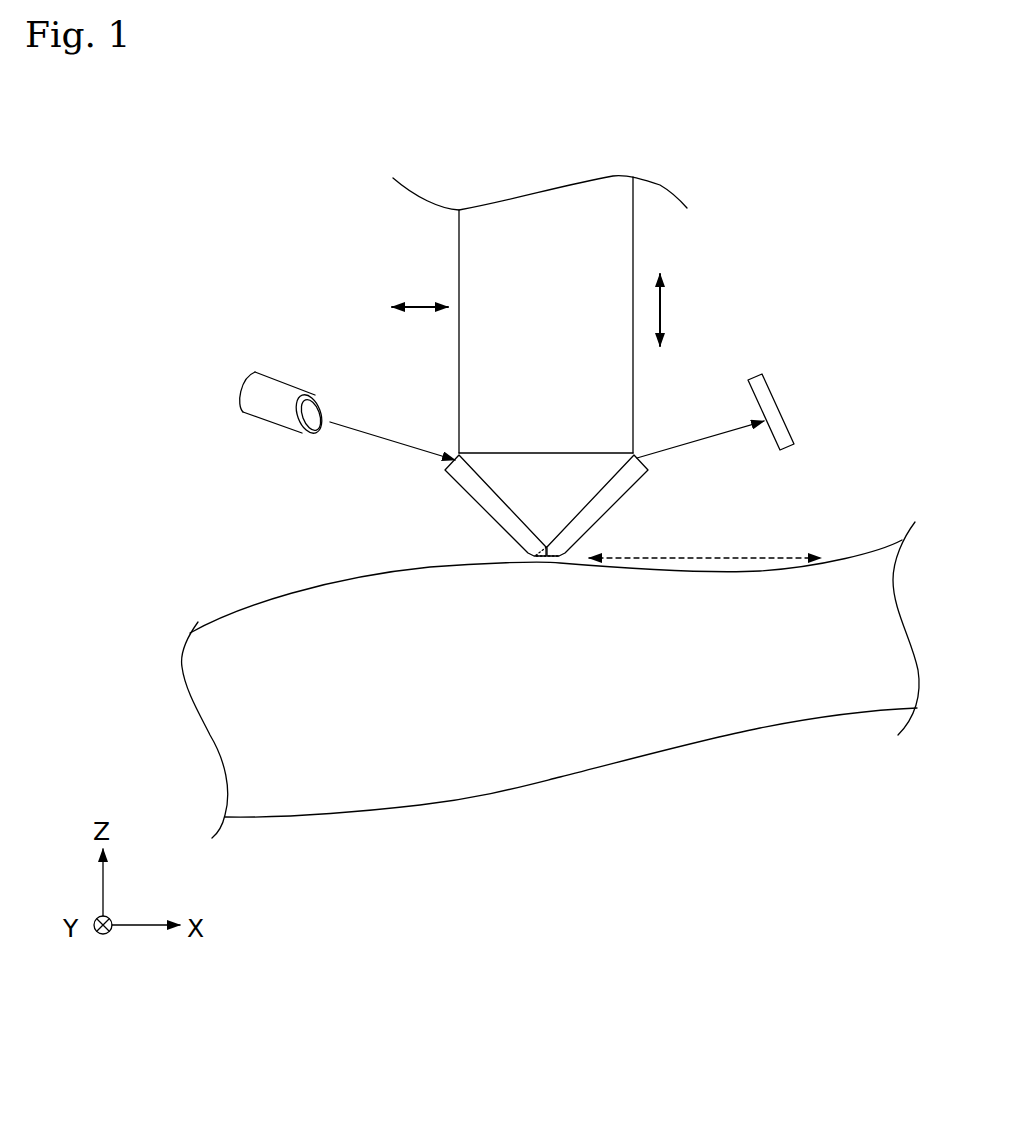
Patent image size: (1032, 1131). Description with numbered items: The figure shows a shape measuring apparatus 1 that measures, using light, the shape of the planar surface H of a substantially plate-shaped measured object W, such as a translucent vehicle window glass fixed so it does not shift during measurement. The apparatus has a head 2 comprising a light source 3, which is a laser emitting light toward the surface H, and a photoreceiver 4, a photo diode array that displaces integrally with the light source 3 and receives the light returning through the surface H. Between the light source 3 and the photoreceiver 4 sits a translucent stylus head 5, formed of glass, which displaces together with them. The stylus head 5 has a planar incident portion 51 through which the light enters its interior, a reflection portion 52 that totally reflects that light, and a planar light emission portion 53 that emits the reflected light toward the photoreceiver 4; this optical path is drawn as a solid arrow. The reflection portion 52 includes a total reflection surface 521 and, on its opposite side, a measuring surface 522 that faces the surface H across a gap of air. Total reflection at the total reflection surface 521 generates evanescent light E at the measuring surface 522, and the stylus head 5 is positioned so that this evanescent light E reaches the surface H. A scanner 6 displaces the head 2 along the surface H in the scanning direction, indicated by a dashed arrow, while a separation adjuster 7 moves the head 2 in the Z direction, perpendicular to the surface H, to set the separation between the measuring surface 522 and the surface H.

The shape measuring apparatus 1 is at (796, 209).
The head 2 is at (530, 450).
The light source 3 is at (283, 380).
The photoreceiver 4 is at (763, 375).
The stylus head 5 is at (575, 498).
The scanner 6 is at (461, 268).
The separation adjuster 7 is at (624, 245).
The incident portion 51 is at (454, 455).
The reflection portion 52 is at (536, 537).
The light emission portion 53 is at (638, 455).
The total reflection surface 521 is at (527, 553).
The measuring surface 522 is at (568, 556).
The evanescent light E is at (543, 563).
The measured object W is at (525, 645).
The surface H is at (268, 593).